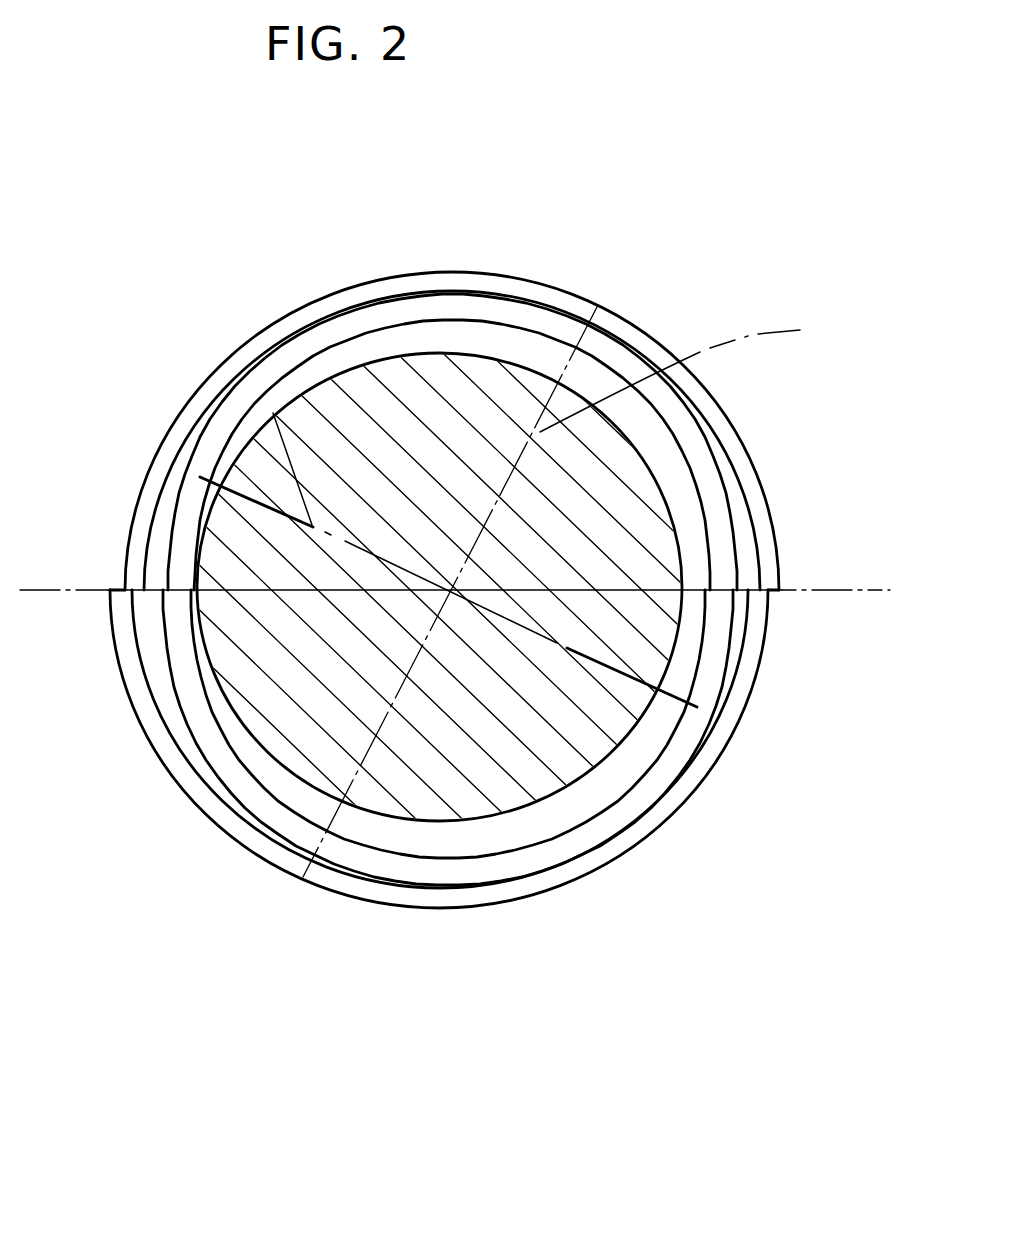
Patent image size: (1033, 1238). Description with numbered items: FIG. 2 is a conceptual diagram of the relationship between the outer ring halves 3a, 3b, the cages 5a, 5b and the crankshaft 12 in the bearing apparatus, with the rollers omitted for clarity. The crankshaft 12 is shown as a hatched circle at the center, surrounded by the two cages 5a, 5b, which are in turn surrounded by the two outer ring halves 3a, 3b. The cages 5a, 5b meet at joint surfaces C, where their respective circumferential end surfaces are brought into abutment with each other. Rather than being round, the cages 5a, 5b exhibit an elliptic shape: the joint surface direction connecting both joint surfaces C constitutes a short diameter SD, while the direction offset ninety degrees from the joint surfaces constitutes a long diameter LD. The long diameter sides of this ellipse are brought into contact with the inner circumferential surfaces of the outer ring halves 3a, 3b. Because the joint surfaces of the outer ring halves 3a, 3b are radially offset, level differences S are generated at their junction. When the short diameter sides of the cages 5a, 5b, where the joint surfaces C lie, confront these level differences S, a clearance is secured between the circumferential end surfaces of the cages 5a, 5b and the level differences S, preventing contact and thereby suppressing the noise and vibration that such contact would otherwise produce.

The outer ring half 3a is at (418, 287).
The outer ring half 3b is at (443, 898).
The cage 5a is at (333, 355).
The cage 5b is at (333, 855).
The crankshaft 12 is at (538, 690).
The joint surface C is at (215, 478).
The level difference S is at (132, 593).
The short diameter SD is at (272, 410).
The long diameter LD is at (695, 376).